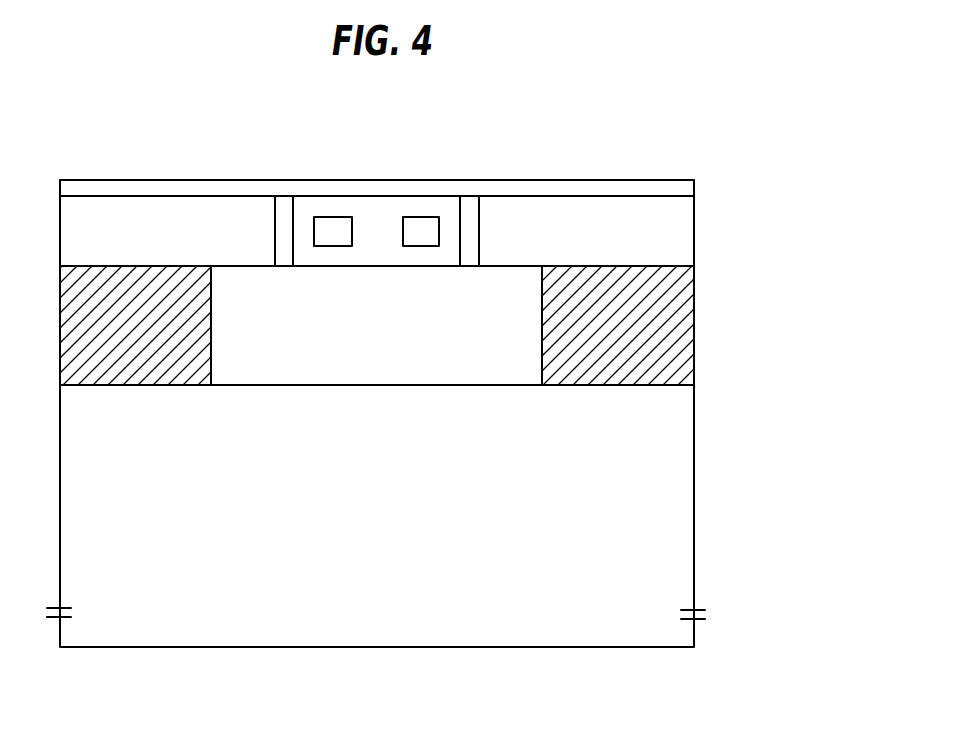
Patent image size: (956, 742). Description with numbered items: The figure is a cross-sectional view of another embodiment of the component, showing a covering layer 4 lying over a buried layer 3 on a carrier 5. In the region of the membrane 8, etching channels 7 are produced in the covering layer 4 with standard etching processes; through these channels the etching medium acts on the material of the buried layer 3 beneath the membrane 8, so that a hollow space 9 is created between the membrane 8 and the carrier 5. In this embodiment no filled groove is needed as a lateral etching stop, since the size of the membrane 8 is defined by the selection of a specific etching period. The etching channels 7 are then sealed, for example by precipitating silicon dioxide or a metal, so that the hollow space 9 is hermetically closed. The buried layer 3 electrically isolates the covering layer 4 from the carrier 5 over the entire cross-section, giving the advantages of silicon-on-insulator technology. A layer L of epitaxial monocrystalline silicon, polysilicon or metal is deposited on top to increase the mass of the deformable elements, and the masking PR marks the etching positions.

The buried layer 3 is at (685, 357).
The covering layer 4 is at (685, 246).
The carrier 5 is at (680, 518).
The etching channels 7 is at (283, 205).
The membrane 8 is at (377, 213).
The hollow space 9 is at (312, 375).
The layer L is at (568, 188).
The photoresist PR is at (325, 225).